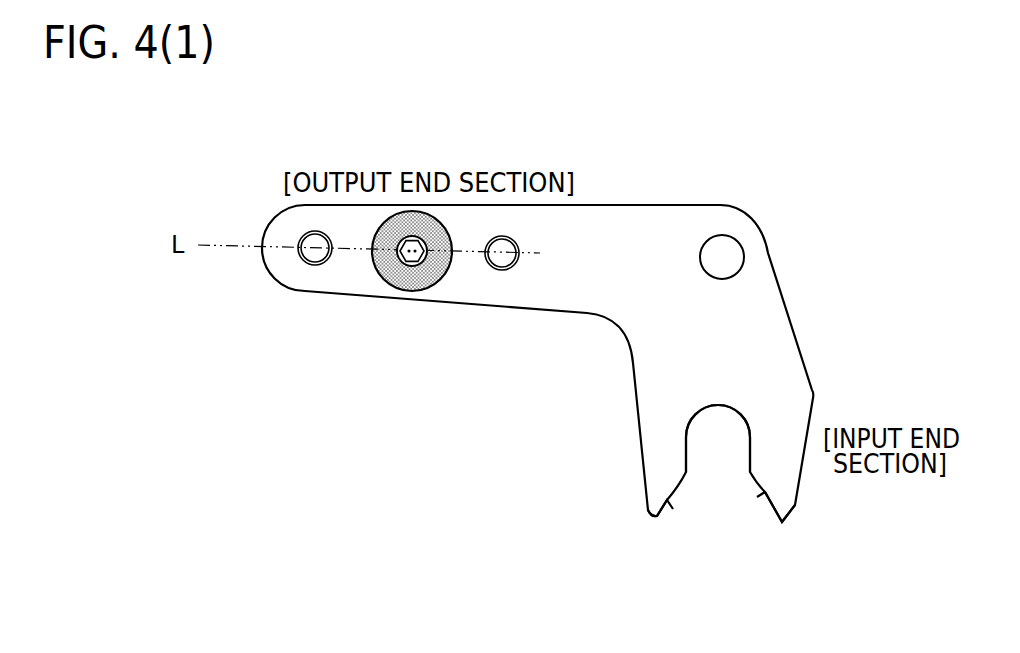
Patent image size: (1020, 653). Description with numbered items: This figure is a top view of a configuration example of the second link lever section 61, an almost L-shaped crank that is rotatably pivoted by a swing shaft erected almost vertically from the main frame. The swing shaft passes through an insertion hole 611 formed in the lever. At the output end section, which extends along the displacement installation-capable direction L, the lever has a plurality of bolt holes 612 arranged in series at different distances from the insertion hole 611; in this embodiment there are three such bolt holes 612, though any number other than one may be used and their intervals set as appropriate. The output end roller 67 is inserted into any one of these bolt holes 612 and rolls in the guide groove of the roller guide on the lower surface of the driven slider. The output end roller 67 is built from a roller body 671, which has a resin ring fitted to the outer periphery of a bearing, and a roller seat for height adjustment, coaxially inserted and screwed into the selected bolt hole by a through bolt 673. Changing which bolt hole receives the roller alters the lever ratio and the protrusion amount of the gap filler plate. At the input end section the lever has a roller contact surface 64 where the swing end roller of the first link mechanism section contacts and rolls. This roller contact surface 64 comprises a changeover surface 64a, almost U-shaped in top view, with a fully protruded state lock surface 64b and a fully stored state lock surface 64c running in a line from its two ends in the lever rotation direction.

The second link lever section 61 is at (620, 210).
The insertion hole 611 is at (728, 243).
The bolt holes 612 is at (311, 258).
The output end roller 67 is at (387, 310).
The roller body 671 is at (382, 282).
The through bolt 673 is at (427, 299).
The roller contact surface 64 is at (725, 527).
The changeover surface 64a is at (707, 410).
The fully protruded state lock surface 64b is at (673, 509).
The fully stored state lock surface 64c is at (757, 497).